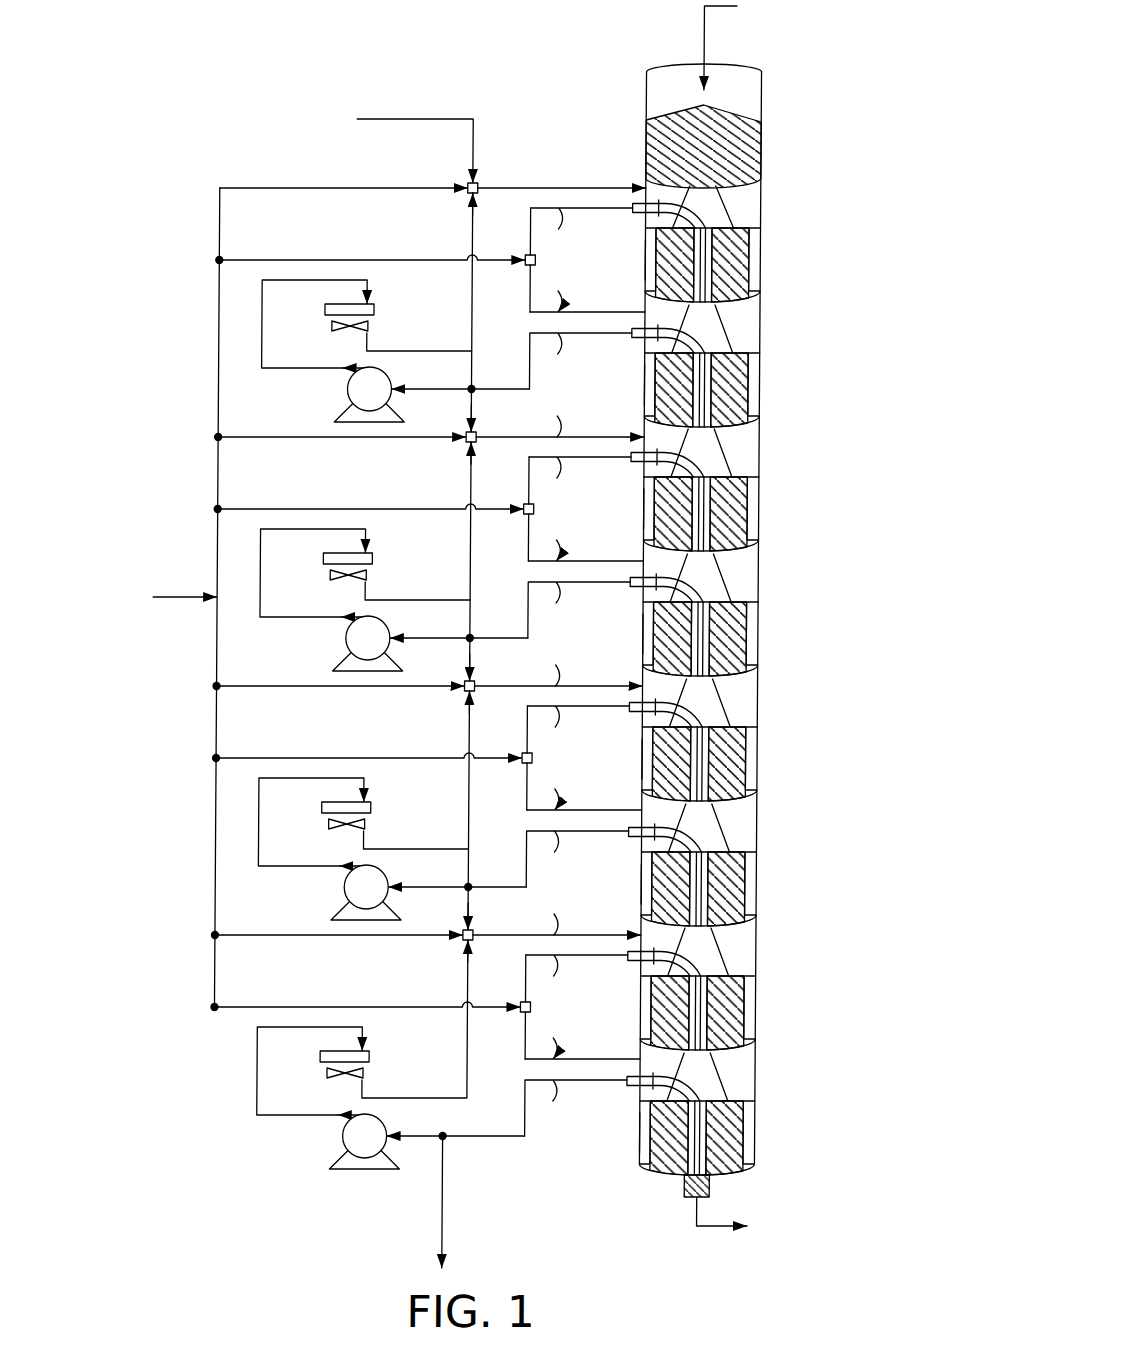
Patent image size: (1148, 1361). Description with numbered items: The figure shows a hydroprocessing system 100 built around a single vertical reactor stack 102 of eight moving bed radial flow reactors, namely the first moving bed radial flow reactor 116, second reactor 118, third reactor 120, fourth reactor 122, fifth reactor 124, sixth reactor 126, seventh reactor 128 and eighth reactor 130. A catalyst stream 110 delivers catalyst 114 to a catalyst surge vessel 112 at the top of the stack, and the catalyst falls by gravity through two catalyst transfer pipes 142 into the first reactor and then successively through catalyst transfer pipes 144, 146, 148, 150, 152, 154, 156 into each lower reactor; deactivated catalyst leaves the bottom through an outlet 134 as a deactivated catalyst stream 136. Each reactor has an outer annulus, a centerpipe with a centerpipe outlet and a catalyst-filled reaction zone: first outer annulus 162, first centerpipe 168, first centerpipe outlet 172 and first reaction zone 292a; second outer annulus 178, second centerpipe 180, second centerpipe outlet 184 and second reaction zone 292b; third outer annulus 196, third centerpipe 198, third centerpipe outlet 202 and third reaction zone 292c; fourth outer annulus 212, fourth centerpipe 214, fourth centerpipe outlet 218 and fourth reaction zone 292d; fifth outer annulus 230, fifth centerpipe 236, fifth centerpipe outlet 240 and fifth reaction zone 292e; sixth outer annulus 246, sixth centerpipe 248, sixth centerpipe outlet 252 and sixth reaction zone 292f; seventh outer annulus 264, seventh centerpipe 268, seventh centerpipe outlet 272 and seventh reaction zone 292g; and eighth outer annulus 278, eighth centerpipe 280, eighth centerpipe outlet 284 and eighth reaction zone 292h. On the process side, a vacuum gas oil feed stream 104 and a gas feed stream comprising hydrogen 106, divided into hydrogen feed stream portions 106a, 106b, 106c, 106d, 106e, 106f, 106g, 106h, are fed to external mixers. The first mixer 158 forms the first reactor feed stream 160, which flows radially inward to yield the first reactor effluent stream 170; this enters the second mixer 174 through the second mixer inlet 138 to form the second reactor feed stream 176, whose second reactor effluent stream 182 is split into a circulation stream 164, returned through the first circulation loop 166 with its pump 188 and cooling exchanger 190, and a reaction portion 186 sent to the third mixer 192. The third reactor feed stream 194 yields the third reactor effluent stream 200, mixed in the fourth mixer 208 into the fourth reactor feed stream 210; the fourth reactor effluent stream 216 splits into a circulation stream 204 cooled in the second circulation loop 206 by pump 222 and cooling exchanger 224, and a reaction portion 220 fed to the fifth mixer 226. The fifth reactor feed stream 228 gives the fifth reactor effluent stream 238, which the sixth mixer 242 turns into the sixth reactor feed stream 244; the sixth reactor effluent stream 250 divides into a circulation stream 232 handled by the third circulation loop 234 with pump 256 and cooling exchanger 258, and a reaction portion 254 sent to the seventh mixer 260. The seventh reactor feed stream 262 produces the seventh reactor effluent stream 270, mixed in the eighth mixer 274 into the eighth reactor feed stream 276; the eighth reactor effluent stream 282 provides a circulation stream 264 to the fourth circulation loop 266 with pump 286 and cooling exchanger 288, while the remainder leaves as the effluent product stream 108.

The hydroprocessing system 100 is at (178, 72).
The vertical reactor stack 102 is at (803, 128).
The vacuum gas oil feed stream 104 is at (372, 118).
The gas feed stream comprising hydrogen 106 is at (172, 596).
The first hydrogen feed stream portion 106a is at (344, 187).
The second hydrogen feed stream portion 106b is at (344, 259).
The third hydrogen stream portion 106c is at (346, 436).
The fourth hydrogen feed stream portion 106d is at (346, 508).
The fifth hydrogen feed stream portion 106e is at (347, 685).
The sixth hydrogen feed stream portion 106f is at (347, 757).
The seventh hydrogen feed stream portion 106g is at (349, 934).
The eighth hydrogen feed stream portion 106h is at (349, 1006).
The effluent product stream 108 is at (451, 1198).
The catalyst stream 110 is at (740, 8).
The catalyst surge vessel 112 is at (764, 90).
The catalyst 114 is at (753, 165).
The first moving bed radial flow reactor 116 is at (763, 278).
The second moving bed radial flow reactor 118 is at (763, 403).
The third moving bed radial flow reactor 120 is at (763, 527).
The fourth moving bed radial flow reactor 122 is at (763, 652).
The fifth moving bed radial flow reactor 124 is at (763, 777).
The sixth moving bed radial flow reactor 126 is at (763, 902).
The seventh moving bed radial flow reactor 128 is at (763, 1026).
The eighth moving bed radial flow reactor 130 is at (763, 1151).
The outlet 134 is at (720, 1187).
The deactivated catalyst stream 136 is at (703, 1214).
The second mixer inlet 138 is at (524, 256).
The catalyst transfer pipes 142 is at (758, 195).
The catalyst transfer pipes 144 is at (758, 320).
The catalyst transfer pipes 146 is at (758, 444).
The catalyst transfer pipes 148 is at (758, 569).
The catalyst transfer pipes 150 is at (758, 694).
The catalyst transfer pipes 152 is at (758, 819).
The catalyst transfer pipes 154 is at (758, 943).
The catalyst transfer pipes 156 is at (758, 1068).
The first mixer 158 is at (466, 196).
The first reactor feed stream 160 is at (605, 187).
The first outer annulus 162 is at (650, 265).
The circulation stream 164 is at (471, 303).
The first circulation loop 166 is at (243, 323).
The first centerpipe 168 is at (709, 295).
The first reactor effluent stream 170 is at (581, 232).
The first centerpipe outlet 172 is at (636, 214).
The second mixer 174 is at (524, 266).
The second reactor feed stream 176 is at (587, 285).
The second outer annulus 178 is at (644, 387).
The second centerpipe 180 is at (709, 420).
The second reactor effluent stream 182 is at (580, 361).
The second centerpipe outlet 184 is at (638, 341).
The reaction portion 186 is at (477, 416).
The pump 188 is at (348, 420).
The cooling exchanger 190 is at (340, 301).
The third mixer 192 is at (468, 445).
The third reactor feed stream 194 is at (529, 411).
The third outer annulus 196 is at (652, 514).
The third centerpipe 198 is at (709, 544).
The third reactor effluent stream 200 is at (580, 481).
The third centerpipe outlet 202 is at (638, 463).
The circulation stream 204 is at (473, 552).
The second circulation loop 206 is at (245, 563).
The fourth mixer 208 is at (526, 515).
The fourth reactor feed stream 210 is at (585, 534).
The fourth outer annulus 212 is at (646, 636).
The fourth centerpipe 214 is at (709, 669).
The fourth reactor effluent stream 216 is at (579, 610).
The fourth centerpipe outlet 218 is at (640, 590).
The reaction portion 220 is at (479, 665).
The pump 222 is at (350, 669).
The cooling exchanger 224 is at (342, 550).
The fifth mixer 226 is at (469, 694).
The fifth reactor feed stream 228 is at (529, 660).
The fifth outer annulus 230 is at (653, 763).
The circulation stream 232 is at (474, 801).
The third circulation loop 234 is at (246, 821).
The fifth centerpipe 236 is at (709, 794).
The fifth reactor effluent stream 238 is at (578, 730).
The fifth centerpipe outlet 240 is at (639, 712).
The sixth mixer 242 is at (527, 764).
The sixth reactor feed stream 244 is at (584, 783).
The sixth outer annulus 246 is at (647, 885).
The sixth centerpipe 248 is at (709, 919).
The sixth reactor effluent stream 250 is at (577, 859).
The sixth centerpipe outlet 252 is at (641, 839).
The reaction portion 254 is at (480, 914).
The pump 256 is at (351, 918).
The cooling exchanger 258 is at (343, 799).
The seventh mixer 260 is at (471, 943).
The seventh reactor feed stream 262 is at (528, 909).
The circulation stream 264 is at (476, 1050).
The fourth circulation loop 266 is at (248, 1071).
The seventh centerpipe 268 is at (709, 1043).
The seventh reactor effluent stream 270 is at (576, 979).
The seventh centerpipe outlet 272 is at (641, 961).
The eighth mixer 274 is at (529, 1013).
The eighth reactor feed stream 276 is at (582, 1032).
The eighth outer annulus 278 is at (649, 1134).
The eighth centerpipe 280 is at (709, 1168).
The eighth reactor effluent stream 282 is at (576, 1108).
The eighth centerpipe outlet 284 is at (643, 1088).
The pump 286 is at (353, 1167).
The cooling exchanger 288 is at (345, 1048).
The first reaction zone 292a is at (751, 253).
The second reaction zone 292b is at (751, 378).
The third reaction zone 292c is at (751, 502).
The fourth reaction zone 292d is at (751, 627).
The fifth reaction zone 292e is at (751, 752).
The sixth reaction zone 292f is at (751, 877).
The seventh reaction zone 292g is at (751, 1001).
The eighth reaction zone 292h is at (751, 1126).